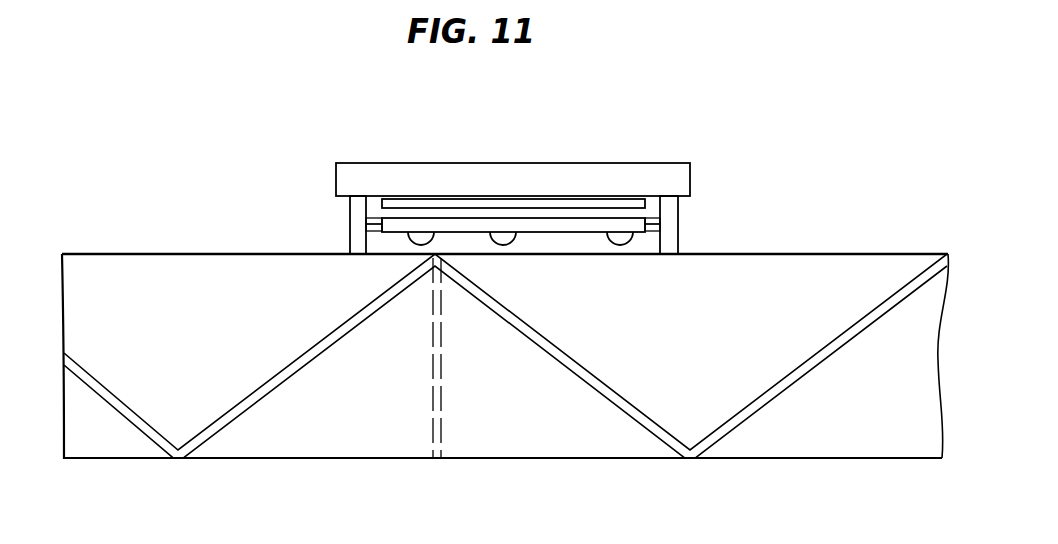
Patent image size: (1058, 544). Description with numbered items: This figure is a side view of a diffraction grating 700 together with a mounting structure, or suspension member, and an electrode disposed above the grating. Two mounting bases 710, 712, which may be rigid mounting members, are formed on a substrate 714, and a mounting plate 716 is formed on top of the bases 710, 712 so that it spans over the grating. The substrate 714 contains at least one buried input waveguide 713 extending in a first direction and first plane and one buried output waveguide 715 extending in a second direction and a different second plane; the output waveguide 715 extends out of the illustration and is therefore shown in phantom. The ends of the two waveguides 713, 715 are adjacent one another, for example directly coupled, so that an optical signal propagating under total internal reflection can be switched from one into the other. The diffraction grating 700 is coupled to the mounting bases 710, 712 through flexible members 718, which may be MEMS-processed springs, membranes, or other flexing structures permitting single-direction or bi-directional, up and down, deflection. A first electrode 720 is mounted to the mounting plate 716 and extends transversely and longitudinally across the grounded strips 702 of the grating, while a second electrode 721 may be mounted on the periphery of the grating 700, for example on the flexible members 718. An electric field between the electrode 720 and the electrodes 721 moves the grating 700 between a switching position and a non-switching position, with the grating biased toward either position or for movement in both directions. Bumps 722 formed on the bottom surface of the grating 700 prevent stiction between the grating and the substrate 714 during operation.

The diffraction grating 700 is at (574, 258).
The strips 702 is at (383, 234).
The mounting base 710 is at (680, 207).
The mounting base 712 is at (350, 237).
The buried input waveguide 713 is at (113, 395).
The substrate 714 is at (902, 443).
The buried output waveguide 715 is at (442, 408).
The mounting plate 716 is at (676, 168).
The flexible members 718 is at (373, 231).
The first electrode 720 is at (437, 202).
The second electrode 721 is at (370, 220).
The bumps 722 is at (410, 244).